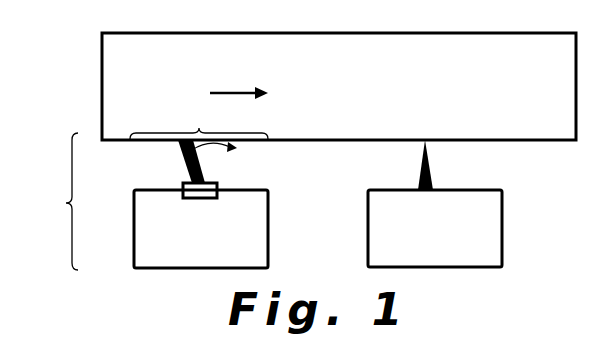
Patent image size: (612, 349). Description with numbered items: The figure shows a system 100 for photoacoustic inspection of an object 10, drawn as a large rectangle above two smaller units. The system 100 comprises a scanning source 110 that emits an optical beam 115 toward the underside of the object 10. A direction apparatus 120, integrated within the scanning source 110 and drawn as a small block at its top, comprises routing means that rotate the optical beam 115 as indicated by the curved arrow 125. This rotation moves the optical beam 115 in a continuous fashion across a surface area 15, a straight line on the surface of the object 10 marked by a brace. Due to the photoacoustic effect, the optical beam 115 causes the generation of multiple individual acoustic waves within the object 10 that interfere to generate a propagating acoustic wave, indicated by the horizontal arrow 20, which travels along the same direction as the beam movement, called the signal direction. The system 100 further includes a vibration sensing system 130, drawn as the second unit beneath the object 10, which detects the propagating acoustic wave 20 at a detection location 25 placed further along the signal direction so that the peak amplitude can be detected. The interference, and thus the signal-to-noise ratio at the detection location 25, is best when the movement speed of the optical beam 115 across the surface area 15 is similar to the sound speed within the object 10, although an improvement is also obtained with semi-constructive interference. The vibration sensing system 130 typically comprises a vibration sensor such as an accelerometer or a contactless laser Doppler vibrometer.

The object 10 is at (452, 76).
The propagating acoustic wave 20 is at (228, 92).
The surface area 15 is at (199, 120).
The detection location 25 is at (426, 140).
The system 100 is at (47, 201).
The scanning source 110 is at (225, 240).
The optical beam 115 is at (184, 157).
The direction apparatus 120 is at (218, 187).
The arrow 125 is at (208, 150).
The vibration sensing system 130 is at (459, 240).